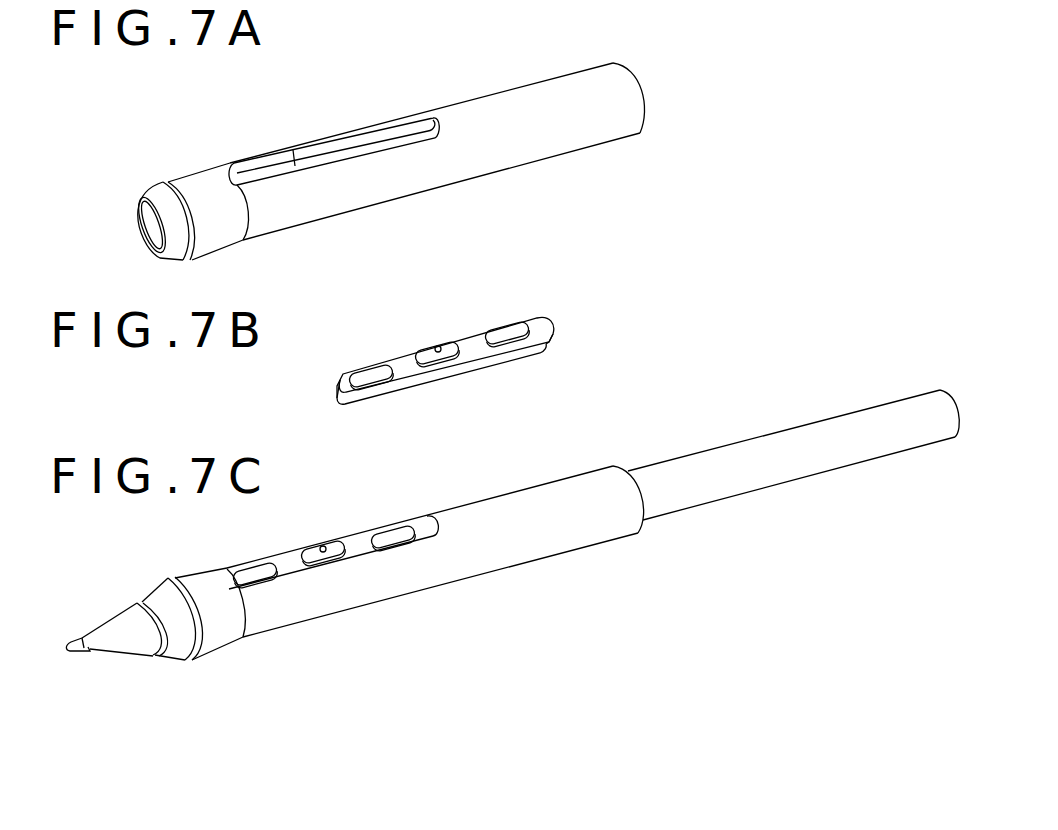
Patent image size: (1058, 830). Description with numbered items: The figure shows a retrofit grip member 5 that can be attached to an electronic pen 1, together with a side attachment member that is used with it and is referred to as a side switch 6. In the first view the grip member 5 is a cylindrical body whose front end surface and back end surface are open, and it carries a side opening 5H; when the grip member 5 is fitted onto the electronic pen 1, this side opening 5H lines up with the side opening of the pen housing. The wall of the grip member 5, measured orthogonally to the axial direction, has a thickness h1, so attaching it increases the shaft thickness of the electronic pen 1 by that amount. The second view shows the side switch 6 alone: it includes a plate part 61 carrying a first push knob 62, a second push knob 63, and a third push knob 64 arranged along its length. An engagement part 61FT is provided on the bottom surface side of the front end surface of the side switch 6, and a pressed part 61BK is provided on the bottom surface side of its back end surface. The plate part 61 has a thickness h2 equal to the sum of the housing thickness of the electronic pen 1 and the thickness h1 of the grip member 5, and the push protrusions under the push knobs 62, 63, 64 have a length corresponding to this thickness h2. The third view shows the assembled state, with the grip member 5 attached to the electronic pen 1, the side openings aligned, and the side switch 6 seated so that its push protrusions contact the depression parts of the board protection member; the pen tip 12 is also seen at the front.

In FIG. 7C, the electronic pen 1 is at (502, 531).
In FIG. 7A, the grip member 5 is at (560, 138).
In FIG. 7C, the grip member 5 is at (538, 548).
In FIG. 7A, the side opening 5H is at (372, 143).
In FIG. 7A, the thickness h1 is at (300, 192).
In FIG. 7B, the side switch 6 is at (446, 344).
In FIG. 7C, the side switch 6 is at (329, 518).
In FIG. 7B, the plate part 61 is at (446, 373).
In FIG. 7B, the engagement part 61FT is at (337, 400).
In FIG. 7B, the pressed part 61BK is at (549, 329).
In FIG. 7B, the first push knob 62 is at (368, 372).
In FIG. 7C, the first push knob 62 is at (245, 570).
In FIG. 7B, the second push knob 63 is at (424, 352).
In FIG. 7C, the second push knob 63 is at (312, 549).
In FIG. 7B, the third push knob 64 is at (511, 330).
In FIG. 7C, the third push knob 64 is at (380, 534).
In FIG. 7B, the thickness h2 is at (403, 362).
In FIG. 7C, the pen tip (core) 12 is at (75, 647).